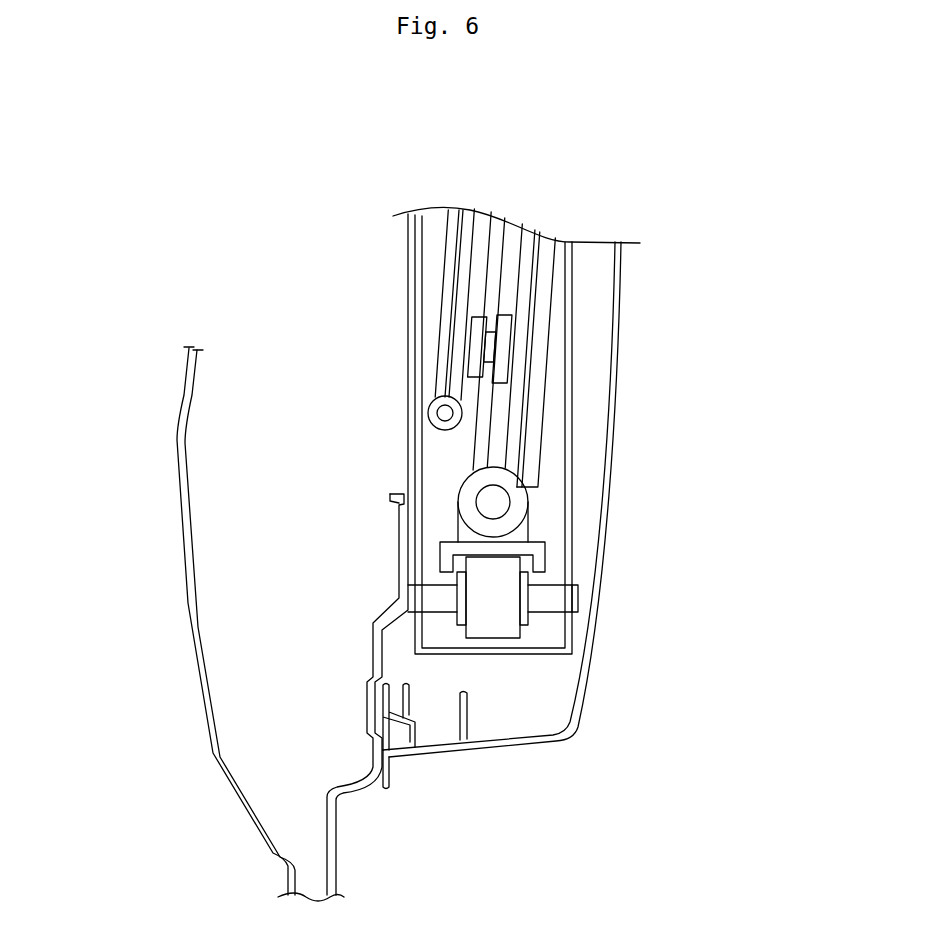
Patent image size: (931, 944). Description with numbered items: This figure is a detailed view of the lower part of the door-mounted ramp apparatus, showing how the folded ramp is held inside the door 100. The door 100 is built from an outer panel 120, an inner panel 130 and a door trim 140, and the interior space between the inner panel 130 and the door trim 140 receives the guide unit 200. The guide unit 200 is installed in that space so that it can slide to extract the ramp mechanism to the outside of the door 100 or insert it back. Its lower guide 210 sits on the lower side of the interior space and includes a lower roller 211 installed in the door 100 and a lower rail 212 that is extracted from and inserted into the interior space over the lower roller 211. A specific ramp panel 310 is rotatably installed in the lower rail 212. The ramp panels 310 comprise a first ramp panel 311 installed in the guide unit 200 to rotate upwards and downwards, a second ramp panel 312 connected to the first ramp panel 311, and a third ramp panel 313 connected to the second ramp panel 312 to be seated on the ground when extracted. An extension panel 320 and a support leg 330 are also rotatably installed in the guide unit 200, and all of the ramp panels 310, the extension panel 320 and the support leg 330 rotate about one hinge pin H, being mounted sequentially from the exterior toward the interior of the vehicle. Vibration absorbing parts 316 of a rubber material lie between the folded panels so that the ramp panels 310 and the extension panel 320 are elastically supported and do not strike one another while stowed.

The door 100 is at (170, 607).
The outer panel 120 is at (180, 466).
The inner panel 130 is at (410, 330).
The door trim 140 is at (610, 453).
The guide unit 200 is at (623, 618).
The lower guide 210 is at (706, 590).
The lower roller 211 is at (505, 617).
The lower rail 212 is at (543, 560).
The ramp panel 310 is at (468, 105).
The first ramp panel 311 is at (500, 223).
The second ramp panel 312 is at (447, 270).
The third ramp panel 313 is at (463, 227).
The vibration absorbing part 316 is at (505, 322).
The extension panel 320 is at (530, 237).
The support leg 330 is at (540, 375).
The hinge pin H is at (493, 499).